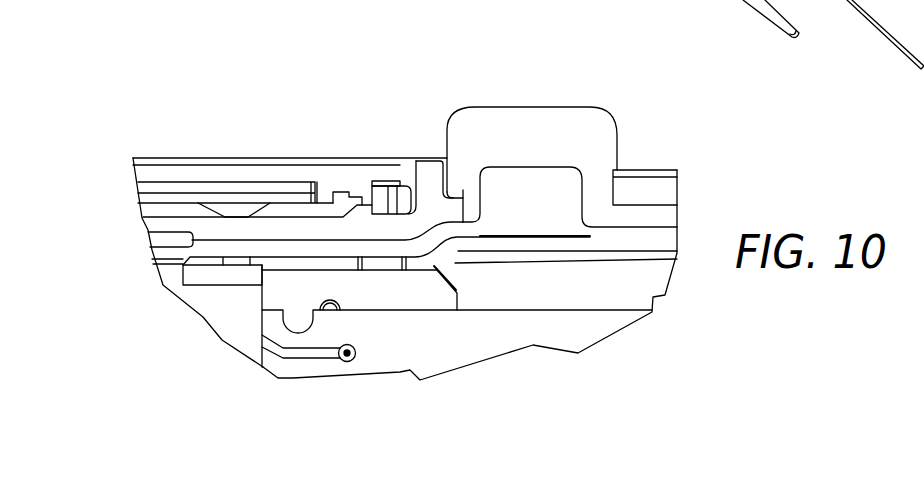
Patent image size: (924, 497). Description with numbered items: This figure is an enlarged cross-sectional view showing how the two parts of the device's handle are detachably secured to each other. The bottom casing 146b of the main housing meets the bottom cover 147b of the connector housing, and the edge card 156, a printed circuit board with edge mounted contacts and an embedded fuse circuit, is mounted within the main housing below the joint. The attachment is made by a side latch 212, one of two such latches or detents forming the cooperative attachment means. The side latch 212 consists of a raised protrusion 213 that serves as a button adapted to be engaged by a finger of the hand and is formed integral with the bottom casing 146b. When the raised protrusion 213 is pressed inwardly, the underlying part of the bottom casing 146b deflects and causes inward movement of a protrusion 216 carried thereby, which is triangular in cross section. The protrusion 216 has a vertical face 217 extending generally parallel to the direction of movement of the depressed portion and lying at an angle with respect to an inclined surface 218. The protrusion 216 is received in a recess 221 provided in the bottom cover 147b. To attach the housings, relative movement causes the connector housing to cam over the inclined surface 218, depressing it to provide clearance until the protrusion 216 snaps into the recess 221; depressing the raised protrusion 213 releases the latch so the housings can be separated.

The bottom cover 147b is at (185, 177).
The inclined surface 218 is at (345, 200).
The protrusion 216 is at (351, 190).
The recess 221 is at (353, 192).
The vertical face 217 is at (398, 167).
The side latch 212 is at (527, 88).
The raised protrusion 213 is at (585, 127).
The bottom casing 146b is at (653, 185).
The edge card 156 is at (520, 323).